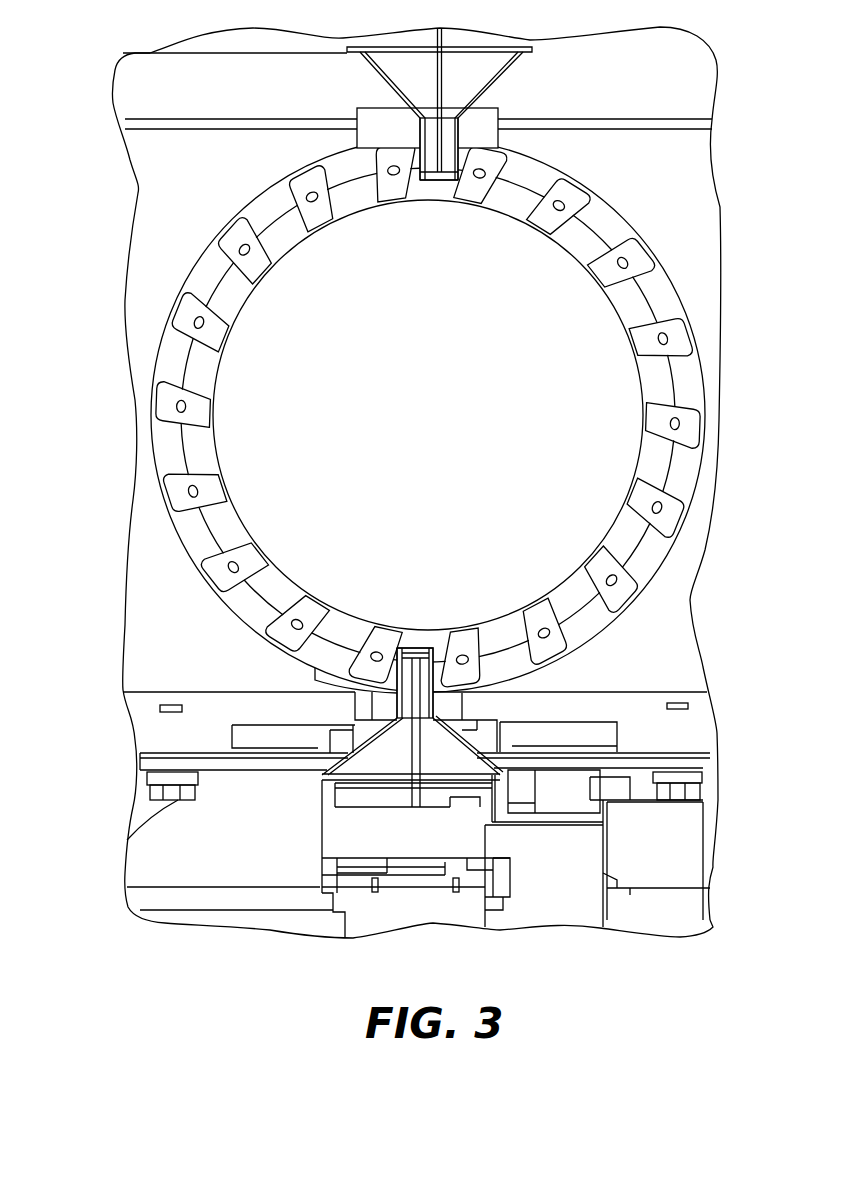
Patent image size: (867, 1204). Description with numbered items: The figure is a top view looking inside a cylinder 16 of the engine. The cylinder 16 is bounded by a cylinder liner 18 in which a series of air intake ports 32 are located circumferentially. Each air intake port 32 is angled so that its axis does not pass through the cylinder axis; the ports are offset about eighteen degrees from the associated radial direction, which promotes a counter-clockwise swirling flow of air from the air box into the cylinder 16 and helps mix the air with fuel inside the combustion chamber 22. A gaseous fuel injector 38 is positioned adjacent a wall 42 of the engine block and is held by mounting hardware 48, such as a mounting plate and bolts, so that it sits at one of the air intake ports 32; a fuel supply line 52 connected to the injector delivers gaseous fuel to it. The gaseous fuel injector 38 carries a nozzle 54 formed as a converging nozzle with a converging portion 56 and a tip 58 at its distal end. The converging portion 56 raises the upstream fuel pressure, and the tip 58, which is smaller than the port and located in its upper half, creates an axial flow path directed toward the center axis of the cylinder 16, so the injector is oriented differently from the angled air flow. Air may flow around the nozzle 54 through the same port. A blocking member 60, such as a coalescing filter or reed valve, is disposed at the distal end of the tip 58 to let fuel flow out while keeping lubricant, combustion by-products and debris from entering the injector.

The cylinder 16 is at (419, 412).
The cylinder liner 18 is at (283, 240).
The combustion chamber 22 is at (618, 393).
The air intake ports 32 is at (568, 243).
The gaseous fuel injector 38 is at (498, 80).
The wall 42 is at (703, 775).
The mounting hardware 48 is at (173, 765).
The fuel supply line 52 is at (688, 862).
The nozzle 54 is at (365, 727).
The converging portion 56 is at (470, 740).
The tip 58 is at (433, 667).
The blocking member 60 is at (385, 688).